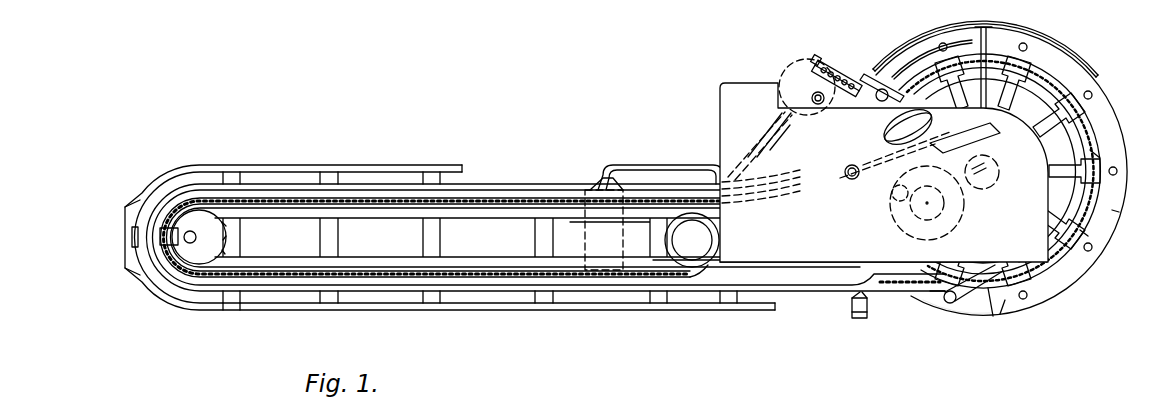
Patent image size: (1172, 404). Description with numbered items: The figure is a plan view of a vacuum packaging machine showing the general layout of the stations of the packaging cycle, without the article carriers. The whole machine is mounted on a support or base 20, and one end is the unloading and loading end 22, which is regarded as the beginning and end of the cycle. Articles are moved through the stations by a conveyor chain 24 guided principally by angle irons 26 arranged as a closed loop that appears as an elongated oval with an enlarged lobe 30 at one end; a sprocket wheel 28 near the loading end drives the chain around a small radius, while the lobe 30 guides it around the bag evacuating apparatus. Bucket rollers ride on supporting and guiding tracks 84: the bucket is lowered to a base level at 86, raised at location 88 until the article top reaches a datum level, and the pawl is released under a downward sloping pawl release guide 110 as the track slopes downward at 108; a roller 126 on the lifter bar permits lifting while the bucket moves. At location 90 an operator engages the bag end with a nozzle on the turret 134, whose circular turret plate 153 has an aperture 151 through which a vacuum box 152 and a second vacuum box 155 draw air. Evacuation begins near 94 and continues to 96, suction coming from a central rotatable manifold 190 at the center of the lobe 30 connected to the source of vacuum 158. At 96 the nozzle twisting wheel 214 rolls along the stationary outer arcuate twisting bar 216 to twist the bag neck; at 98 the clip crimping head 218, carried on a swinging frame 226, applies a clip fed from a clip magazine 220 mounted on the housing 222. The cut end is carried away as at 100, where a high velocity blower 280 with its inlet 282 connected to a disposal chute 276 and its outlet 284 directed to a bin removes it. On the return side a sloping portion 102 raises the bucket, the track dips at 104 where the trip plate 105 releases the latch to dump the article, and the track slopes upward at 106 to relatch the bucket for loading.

The support or base 20 is at (800, 294).
The unloading and loading end 22 is at (188, 305).
The conveyor chain 24 is at (547, 280).
The angle irons 26 is at (418, 292).
The sprocket wheel 28 is at (225, 244).
The lobe 30 is at (1095, 152).
The supporting and guiding tracks 84 is at (305, 312).
The lowering operation location 86 is at (735, 316).
The raising location 88 is at (855, 320).
The operator location 90 is at (975, 318).
The evacuation beginning point 94 is at (1070, 290).
The twisting location 96 is at (1068, 46).
The clipping location 98 is at (866, 72).
The excess material removal location 100 is at (842, 156).
The sloping portion 102 is at (362, 165).
The track dip 104 is at (128, 200).
The trip plate 105 is at (160, 237).
The upwardly sloping track 106 is at (140, 283).
The downwardly sloping track 108 is at (690, 305).
The pawl release guide 110 is at (748, 265).
The roller 126 is at (867, 316).
The turret 134 is at (1090, 238).
The aperture 151 is at (1088, 252).
The vacuum box 152 is at (975, 305).
The circular turret plate 153 is at (1100, 212).
The second vacuum box 155 is at (1048, 310).
The source of vacuum 158 is at (790, 78).
The central rotatable manifold 190 is at (1000, 182).
The nozzle twisting wheel 214 is at (1098, 92).
The outer arcuate twisting bar 216 is at (975, 24).
The clip crimping head 218 is at (843, 62).
The clip magazine 220 is at (935, 145).
The housing 222 is at (1025, 240).
The swinging frame 226 is at (812, 58).
The disposal chute 276 is at (850, 180).
The high velocity blower 280 is at (900, 238).
The blower inlet 282 is at (892, 198).
The blower outlet 284 is at (992, 150).